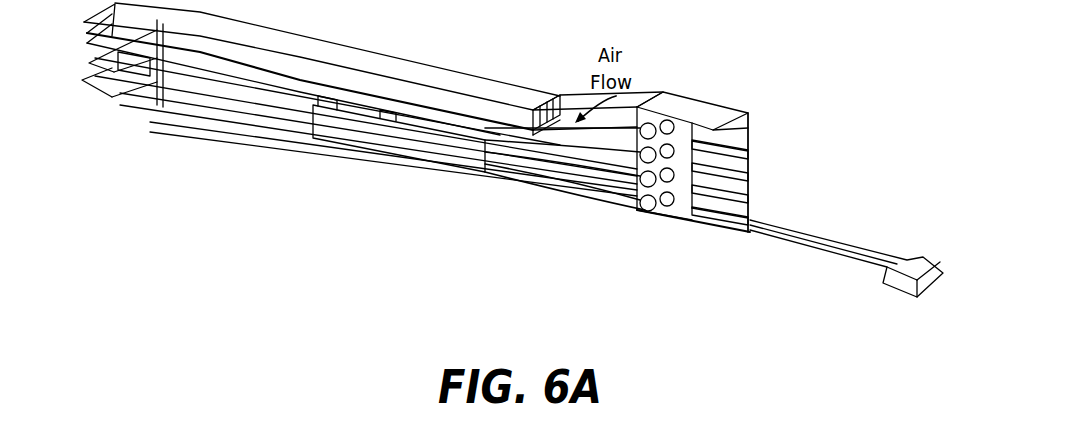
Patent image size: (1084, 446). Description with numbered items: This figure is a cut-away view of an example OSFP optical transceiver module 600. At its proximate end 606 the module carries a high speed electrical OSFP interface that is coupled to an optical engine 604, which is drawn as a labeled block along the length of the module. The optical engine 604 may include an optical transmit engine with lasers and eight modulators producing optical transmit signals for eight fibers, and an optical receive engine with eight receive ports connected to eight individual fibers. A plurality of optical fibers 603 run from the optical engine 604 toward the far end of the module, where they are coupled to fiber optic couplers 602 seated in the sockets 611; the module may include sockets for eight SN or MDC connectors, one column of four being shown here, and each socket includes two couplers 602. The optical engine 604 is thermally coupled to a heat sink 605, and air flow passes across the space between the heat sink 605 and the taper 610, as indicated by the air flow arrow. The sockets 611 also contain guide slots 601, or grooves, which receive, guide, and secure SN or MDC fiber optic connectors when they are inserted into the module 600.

The OSFP optical transceiver module 600 is at (838, 44).
The guide slots 601 is at (747, 162).
The fiber optic couplers 602 is at (652, 210).
The optical fibers 603 is at (580, 190).
The optical engine 604 is at (410, 157).
The heat sink 605 is at (565, 107).
The proximate end 606 is at (142, 78).
The taper 610 is at (644, 92).
The sockets 611 is at (704, 144).